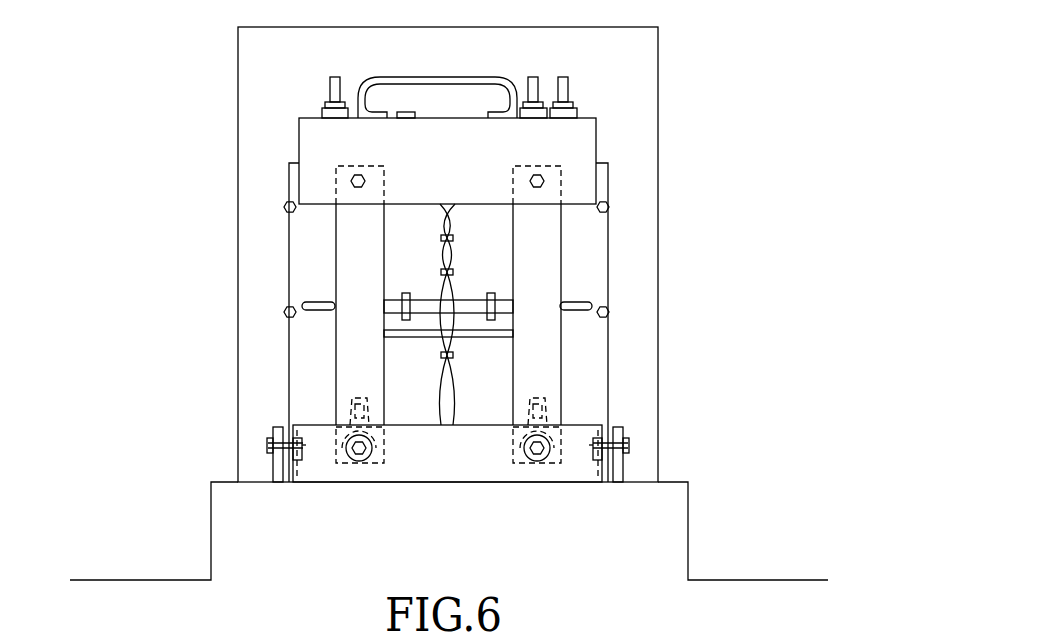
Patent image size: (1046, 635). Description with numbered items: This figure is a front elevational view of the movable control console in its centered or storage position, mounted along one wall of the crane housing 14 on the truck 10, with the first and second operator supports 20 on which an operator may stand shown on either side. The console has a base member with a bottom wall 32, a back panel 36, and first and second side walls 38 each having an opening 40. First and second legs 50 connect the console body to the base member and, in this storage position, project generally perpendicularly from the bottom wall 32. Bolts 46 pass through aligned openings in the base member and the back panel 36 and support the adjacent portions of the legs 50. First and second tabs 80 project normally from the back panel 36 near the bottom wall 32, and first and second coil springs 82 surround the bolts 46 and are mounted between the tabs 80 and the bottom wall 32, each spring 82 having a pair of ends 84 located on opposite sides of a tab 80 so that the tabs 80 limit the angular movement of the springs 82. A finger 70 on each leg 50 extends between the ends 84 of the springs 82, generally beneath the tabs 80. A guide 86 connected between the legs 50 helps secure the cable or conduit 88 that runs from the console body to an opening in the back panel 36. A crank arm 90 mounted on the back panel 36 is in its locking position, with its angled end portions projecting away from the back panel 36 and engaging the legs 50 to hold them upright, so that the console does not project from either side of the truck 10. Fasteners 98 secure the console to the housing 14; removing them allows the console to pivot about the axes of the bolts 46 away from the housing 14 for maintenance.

The truck 10 is at (632, 550).
The housing 14 is at (642, 62).
The operator supports 20 is at (585, 143).
The bottom wall 32 is at (413, 467).
The back panel 36 is at (588, 247).
The side walls 38 is at (297, 470).
The opening 40 is at (273, 473).
The bolts 46 is at (267, 447).
The legs 50 is at (348, 247).
The finger 70 is at (556, 435).
The tabs 80 is at (534, 395).
The coil springs 82 is at (562, 467).
The spring ends 84 is at (530, 403).
The guide 86 is at (400, 335).
The cable or conduit 88 is at (460, 406).
The crank arm 90 is at (577, 307).
The fasteners 98 is at (610, 202).